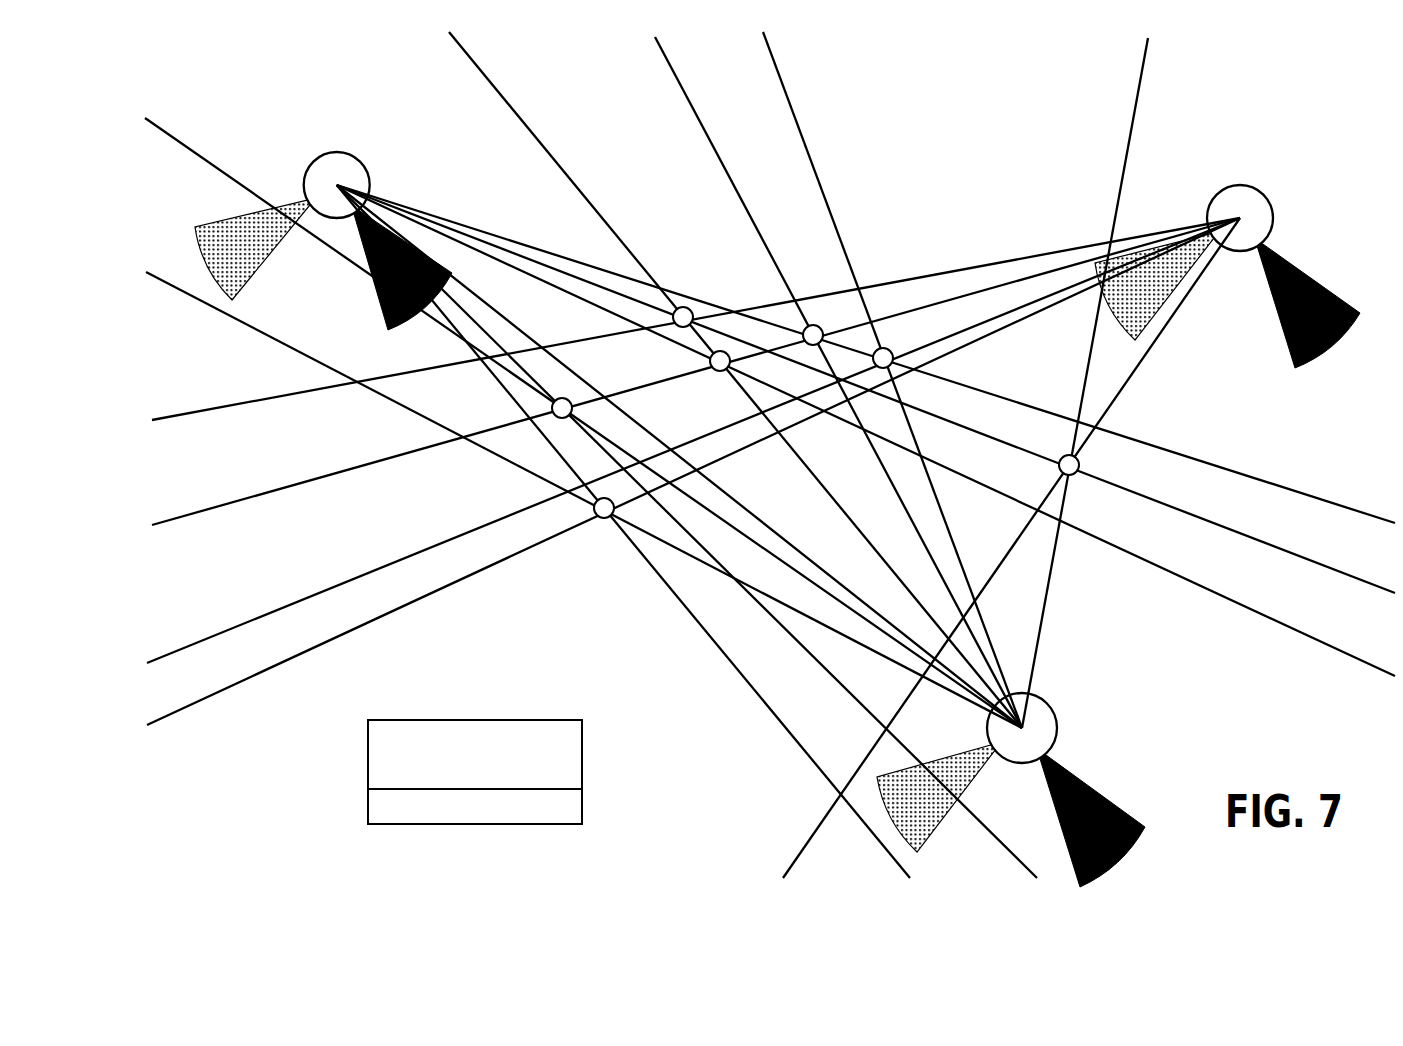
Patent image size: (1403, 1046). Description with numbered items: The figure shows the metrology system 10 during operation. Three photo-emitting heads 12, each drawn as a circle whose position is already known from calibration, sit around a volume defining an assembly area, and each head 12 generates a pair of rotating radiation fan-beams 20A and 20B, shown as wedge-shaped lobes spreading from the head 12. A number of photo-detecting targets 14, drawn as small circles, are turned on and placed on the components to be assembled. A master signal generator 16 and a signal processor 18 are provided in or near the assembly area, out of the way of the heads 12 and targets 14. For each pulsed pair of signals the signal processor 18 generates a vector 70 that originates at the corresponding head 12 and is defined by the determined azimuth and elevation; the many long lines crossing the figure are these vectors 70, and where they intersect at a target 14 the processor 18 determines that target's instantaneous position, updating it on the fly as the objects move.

The metrology system 10 is at (318, 726).
The photo-emitting head 12 is at (363, 160).
The photo-detecting target 14 is at (812, 326).
The master signal generator 16 is at (583, 751).
The signal processor 18 is at (583, 806).
The rotating radiation fan-beam 20A is at (373, 300).
The rotating radiation fan-beam 20B is at (220, 218).
The vector 70 is at (799, 128).